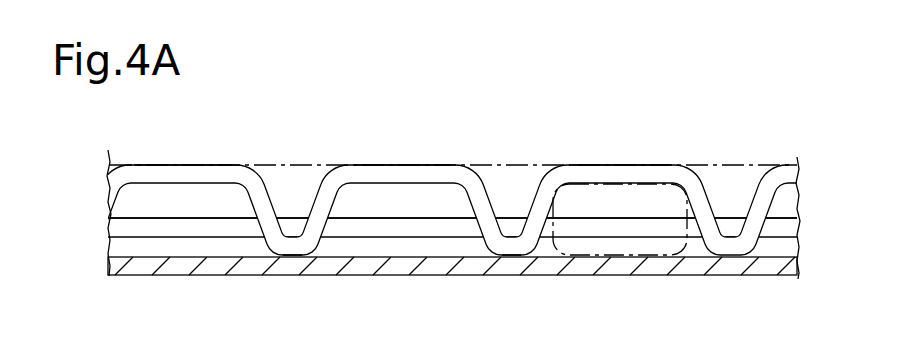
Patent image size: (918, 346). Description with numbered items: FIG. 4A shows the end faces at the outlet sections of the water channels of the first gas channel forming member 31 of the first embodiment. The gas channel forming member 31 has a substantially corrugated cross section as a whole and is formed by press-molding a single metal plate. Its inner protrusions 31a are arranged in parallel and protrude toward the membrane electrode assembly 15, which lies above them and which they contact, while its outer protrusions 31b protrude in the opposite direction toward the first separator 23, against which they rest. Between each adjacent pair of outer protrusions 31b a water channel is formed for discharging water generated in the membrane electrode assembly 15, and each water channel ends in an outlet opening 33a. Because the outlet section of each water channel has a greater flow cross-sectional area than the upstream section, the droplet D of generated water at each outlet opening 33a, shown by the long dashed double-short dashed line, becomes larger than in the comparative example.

The gas channel forming member 31 is at (713, 157).
The inner protrusion 31a is at (188, 163).
The outer protrusion 31b is at (293, 257).
The outlet opening 33a is at (333, 243).
The membrane electrode assembly 15 is at (108, 172).
The first separator 23 is at (125, 278).
The droplet D is at (628, 259).